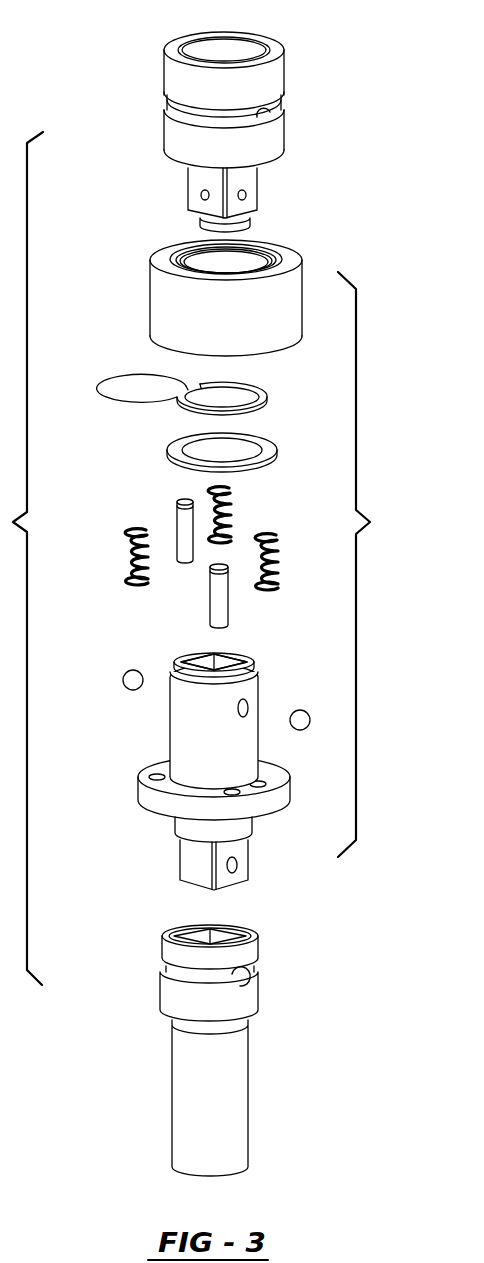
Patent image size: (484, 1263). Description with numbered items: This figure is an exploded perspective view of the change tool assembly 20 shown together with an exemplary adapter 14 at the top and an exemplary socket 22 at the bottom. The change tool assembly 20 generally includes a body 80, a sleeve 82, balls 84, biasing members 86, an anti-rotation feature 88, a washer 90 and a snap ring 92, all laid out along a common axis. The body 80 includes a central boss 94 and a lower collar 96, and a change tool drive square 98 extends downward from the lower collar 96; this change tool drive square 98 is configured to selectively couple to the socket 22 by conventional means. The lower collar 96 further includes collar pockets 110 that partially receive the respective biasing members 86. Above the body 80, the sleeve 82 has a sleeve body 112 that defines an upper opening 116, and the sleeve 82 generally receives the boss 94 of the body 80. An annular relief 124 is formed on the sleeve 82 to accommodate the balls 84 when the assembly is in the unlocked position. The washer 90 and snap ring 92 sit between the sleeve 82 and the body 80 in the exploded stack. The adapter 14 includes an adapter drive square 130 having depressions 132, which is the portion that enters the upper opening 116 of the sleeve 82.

The adapter 14 is at (270, 80).
The adapter drive square 130 is at (250, 180).
The depressions 132 is at (200, 195).
The annular relief 124 is at (190, 244).
The upper opening 116 is at (242, 262).
The sleeve body 112 is at (278, 298).
The sleeve 82 is at (177, 310).
The snap ring 92 is at (177, 398).
The washer 90 is at (175, 442).
The anti-rotation feature 88 is at (183, 512).
The biasing members 86 is at (137, 560).
The central boss 94 is at (235, 733).
The balls 84 is at (133, 670).
The body 80 is at (205, 740).
The collar pockets 110 is at (157, 776).
The lower collar 96 is at (163, 815).
The change tool drive square 98 is at (242, 873).
The socket 22 is at (225, 1097).
The change tool assembly 20 is at (370, 564).